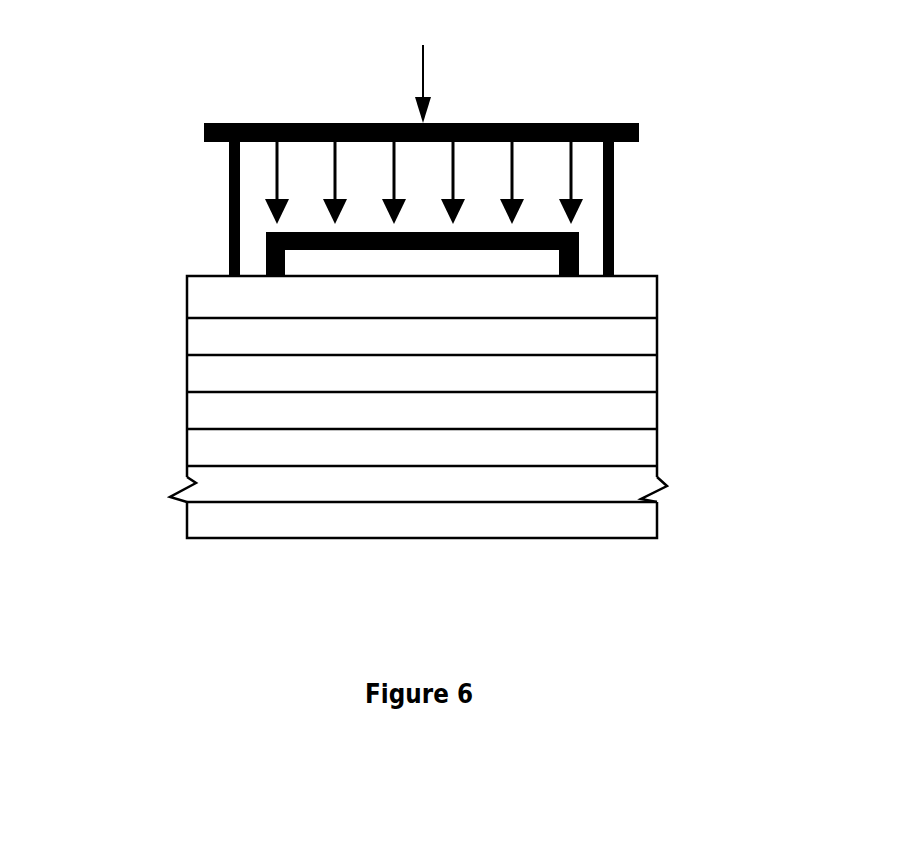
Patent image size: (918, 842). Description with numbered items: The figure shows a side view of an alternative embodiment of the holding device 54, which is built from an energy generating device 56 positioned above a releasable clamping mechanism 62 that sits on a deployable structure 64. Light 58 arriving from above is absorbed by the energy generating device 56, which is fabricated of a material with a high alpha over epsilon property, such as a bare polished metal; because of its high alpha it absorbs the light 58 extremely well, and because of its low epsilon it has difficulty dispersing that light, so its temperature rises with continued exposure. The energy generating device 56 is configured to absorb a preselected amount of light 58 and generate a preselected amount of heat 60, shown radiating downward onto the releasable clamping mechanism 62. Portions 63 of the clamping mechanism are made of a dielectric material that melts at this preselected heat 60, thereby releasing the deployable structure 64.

The holding device 54 is at (108, 104).
The energy generating device 56 is at (630, 123).
The light 58 is at (426, 69).
The heat 60 is at (571, 175).
The releasable clamping mechanism 62 is at (279, 232).
The portions of the releasable clamping device 63 is at (266, 257).
The deployable structure 64 is at (627, 373).